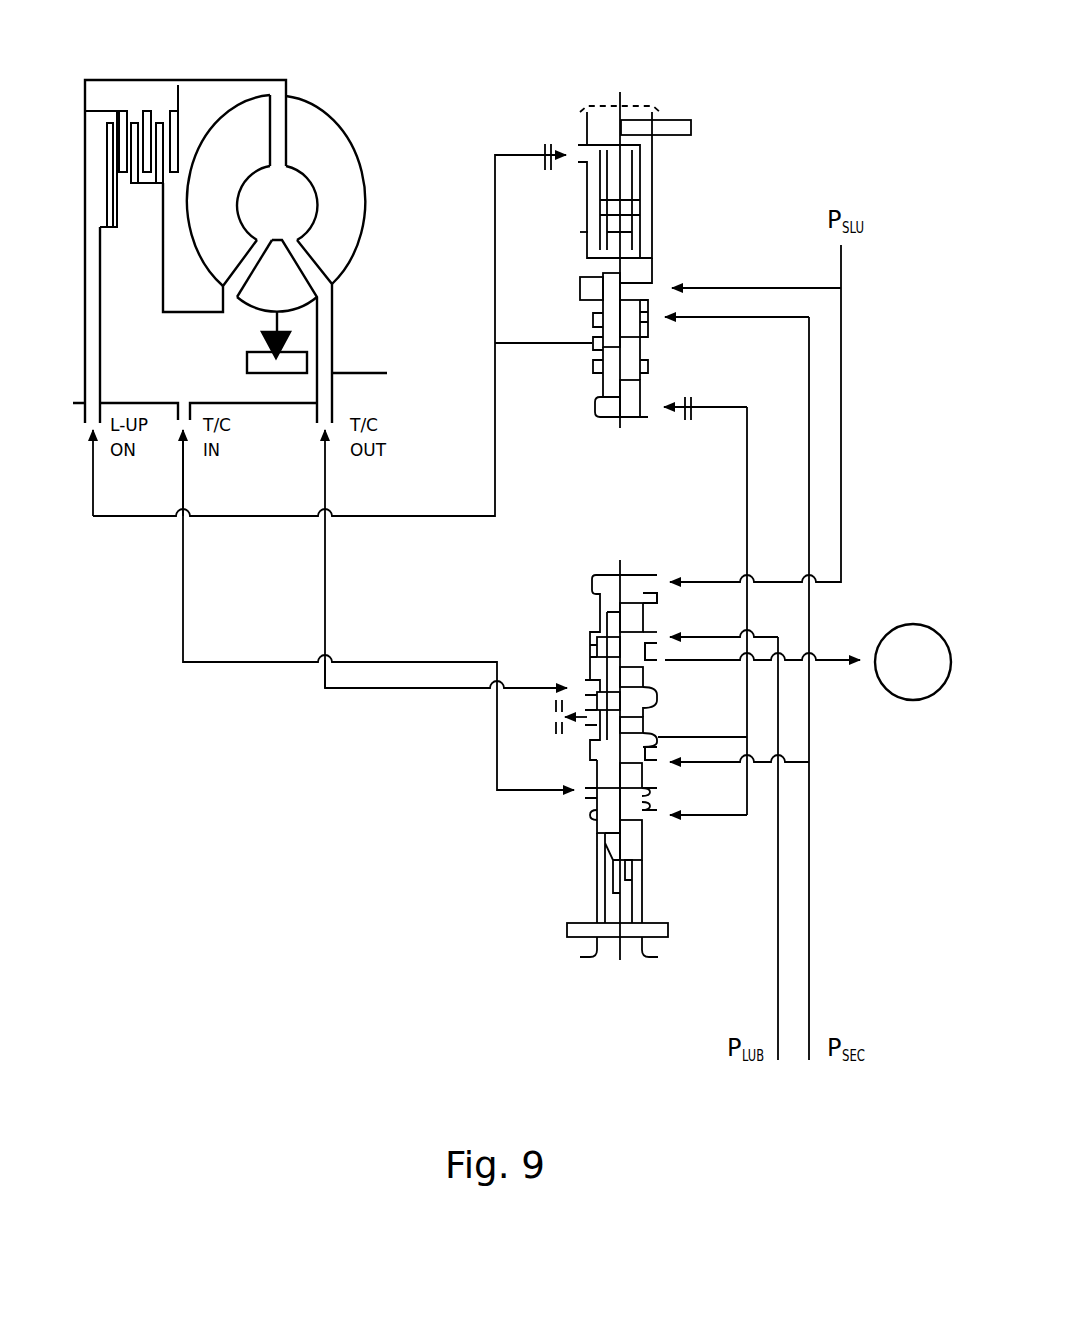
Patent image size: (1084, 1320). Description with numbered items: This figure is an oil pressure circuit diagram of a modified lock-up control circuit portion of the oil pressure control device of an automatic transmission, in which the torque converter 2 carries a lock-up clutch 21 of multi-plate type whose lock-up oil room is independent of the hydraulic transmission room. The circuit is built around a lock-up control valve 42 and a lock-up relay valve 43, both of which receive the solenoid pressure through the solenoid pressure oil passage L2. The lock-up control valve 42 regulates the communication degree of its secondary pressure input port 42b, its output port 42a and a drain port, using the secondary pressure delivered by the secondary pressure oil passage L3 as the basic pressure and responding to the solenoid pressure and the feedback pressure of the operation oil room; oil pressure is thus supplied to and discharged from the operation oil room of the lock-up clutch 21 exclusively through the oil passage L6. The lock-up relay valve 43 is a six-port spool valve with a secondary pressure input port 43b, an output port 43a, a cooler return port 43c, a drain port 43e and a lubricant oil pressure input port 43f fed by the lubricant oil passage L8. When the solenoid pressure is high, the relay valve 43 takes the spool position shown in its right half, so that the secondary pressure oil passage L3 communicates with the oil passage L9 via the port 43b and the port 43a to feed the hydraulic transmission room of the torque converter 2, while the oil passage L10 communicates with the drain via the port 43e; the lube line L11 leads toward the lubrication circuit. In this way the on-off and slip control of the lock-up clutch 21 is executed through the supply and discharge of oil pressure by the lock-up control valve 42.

The torque converter 2 is at (335, 118).
The lock-up clutch 21 is at (133, 98).
The lock-up control valve 42 is at (657, 256).
The output port 42a is at (598, 352).
The secondary pressure input port 42b is at (655, 322).
The lock-up relay valve 43 is at (596, 798).
The output port 43a is at (588, 797).
The secondary pressure input port 43b is at (660, 768).
The cooler return port 43c is at (660, 667).
The drain port 43e is at (582, 678).
The lubricant oil pressure input port 43f is at (660, 630).
The solenoid pressure oil passage L2 is at (841, 422).
The secondary pressure oil passage L3 is at (809, 968).
The oil passage L6 is at (383, 516).
The lubricant oil passage L8 is at (778, 975).
The oil passage L9 is at (183, 580).
The oil passage L10 is at (377, 690).
The oil passage L11 is at (840, 660).